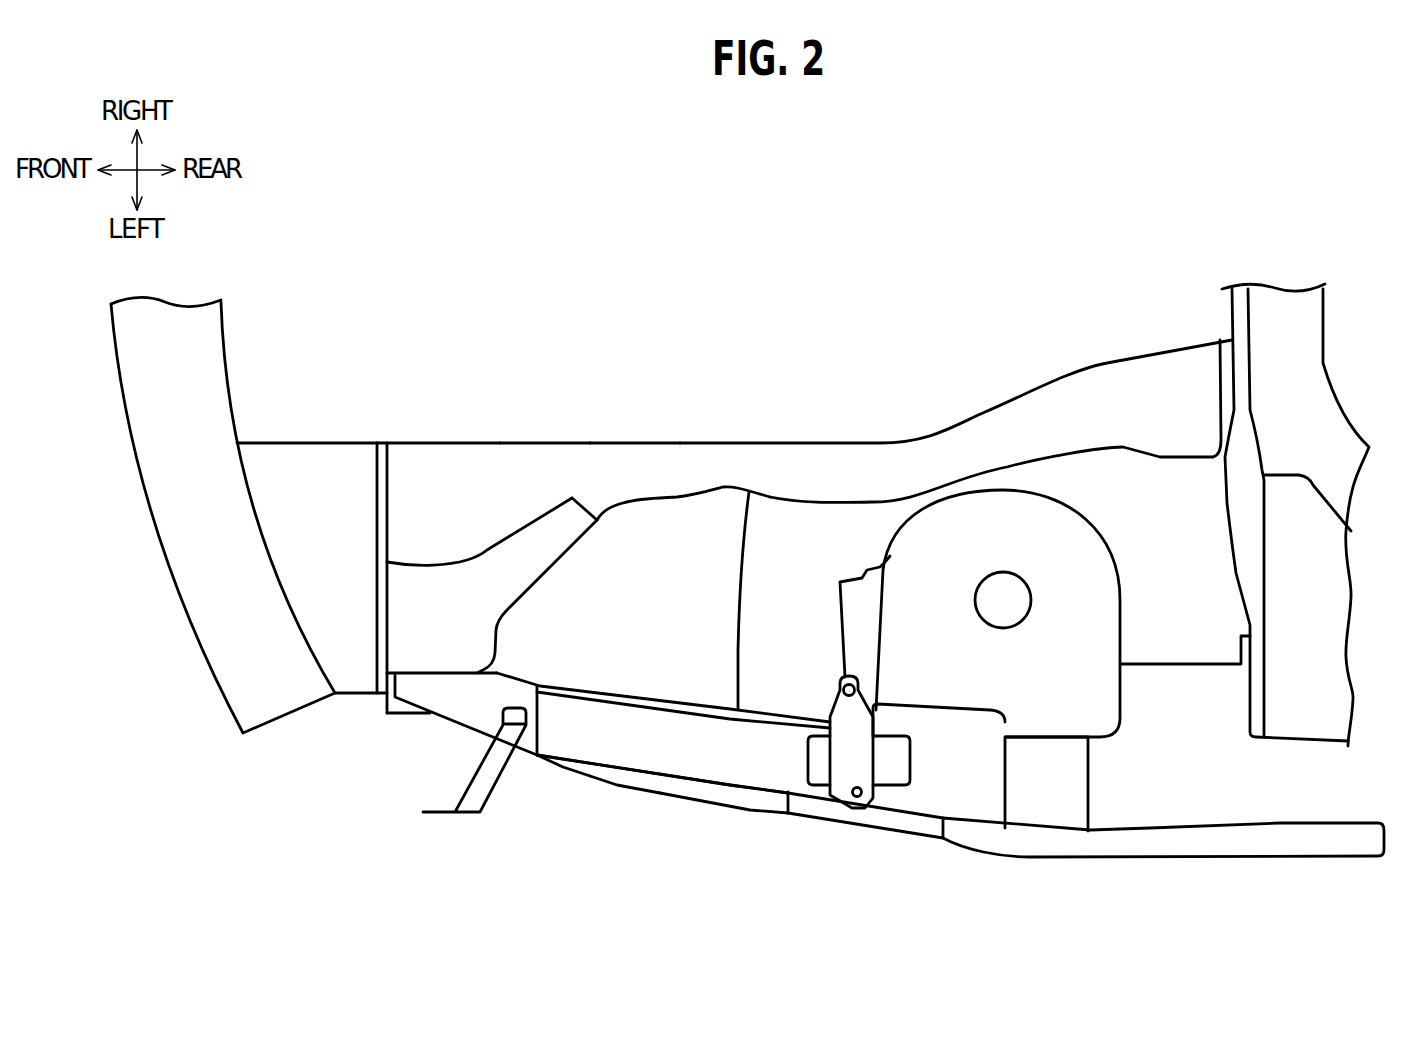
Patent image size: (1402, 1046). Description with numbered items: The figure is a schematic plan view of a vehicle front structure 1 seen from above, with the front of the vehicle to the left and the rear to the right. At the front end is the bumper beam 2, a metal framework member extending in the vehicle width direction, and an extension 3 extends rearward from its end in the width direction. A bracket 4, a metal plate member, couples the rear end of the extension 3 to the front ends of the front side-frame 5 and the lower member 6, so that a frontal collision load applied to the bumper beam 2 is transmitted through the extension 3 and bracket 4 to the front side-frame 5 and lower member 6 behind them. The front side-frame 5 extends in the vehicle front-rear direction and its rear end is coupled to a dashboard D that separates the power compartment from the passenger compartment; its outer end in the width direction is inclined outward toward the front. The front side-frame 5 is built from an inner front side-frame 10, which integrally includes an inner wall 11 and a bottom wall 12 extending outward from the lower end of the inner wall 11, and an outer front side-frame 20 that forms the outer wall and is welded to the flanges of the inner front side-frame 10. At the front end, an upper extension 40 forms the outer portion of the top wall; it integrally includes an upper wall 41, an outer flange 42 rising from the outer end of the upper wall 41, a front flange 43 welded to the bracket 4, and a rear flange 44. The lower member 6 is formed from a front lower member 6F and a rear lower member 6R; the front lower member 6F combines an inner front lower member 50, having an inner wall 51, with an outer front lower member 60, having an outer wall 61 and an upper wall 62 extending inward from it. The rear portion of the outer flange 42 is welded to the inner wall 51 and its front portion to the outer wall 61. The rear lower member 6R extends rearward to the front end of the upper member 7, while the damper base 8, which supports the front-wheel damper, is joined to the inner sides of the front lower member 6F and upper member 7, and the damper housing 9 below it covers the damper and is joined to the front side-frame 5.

The vehicle front structure 1 is at (830, 349).
The bumper beam 2 is at (200, 536).
The extension 3 is at (303, 462).
The bracket 4 is at (380, 452).
The front side-frame 5 is at (715, 465).
The lower member 6 is at (1086, 824).
The front lower member 6F is at (732, 798).
The rear lower member 6R is at (832, 813).
The upper member 7 is at (1072, 787).
The damper base 8 is at (1080, 678).
The damper housing 9 is at (760, 608).
The inner front side-frame 10 is at (448, 465).
The inner wall 11 is at (540, 442).
The bottom wall 12 is at (633, 467).
The outer front side-frame 20 is at (678, 503).
The upper extension 40 is at (535, 563).
The upper wall 41 is at (485, 592).
The outer flange 42 is at (425, 673).
The front flange 43 is at (389, 612).
The rear flange 44 is at (585, 537).
The inner front lower member 50 is at (583, 690).
The inner wall 51 is at (666, 700).
The outer front lower member 60 is at (572, 775).
The outer wall 61 is at (620, 790).
The upper wall 62 is at (645, 786).
The dashboard D is at (1236, 317).